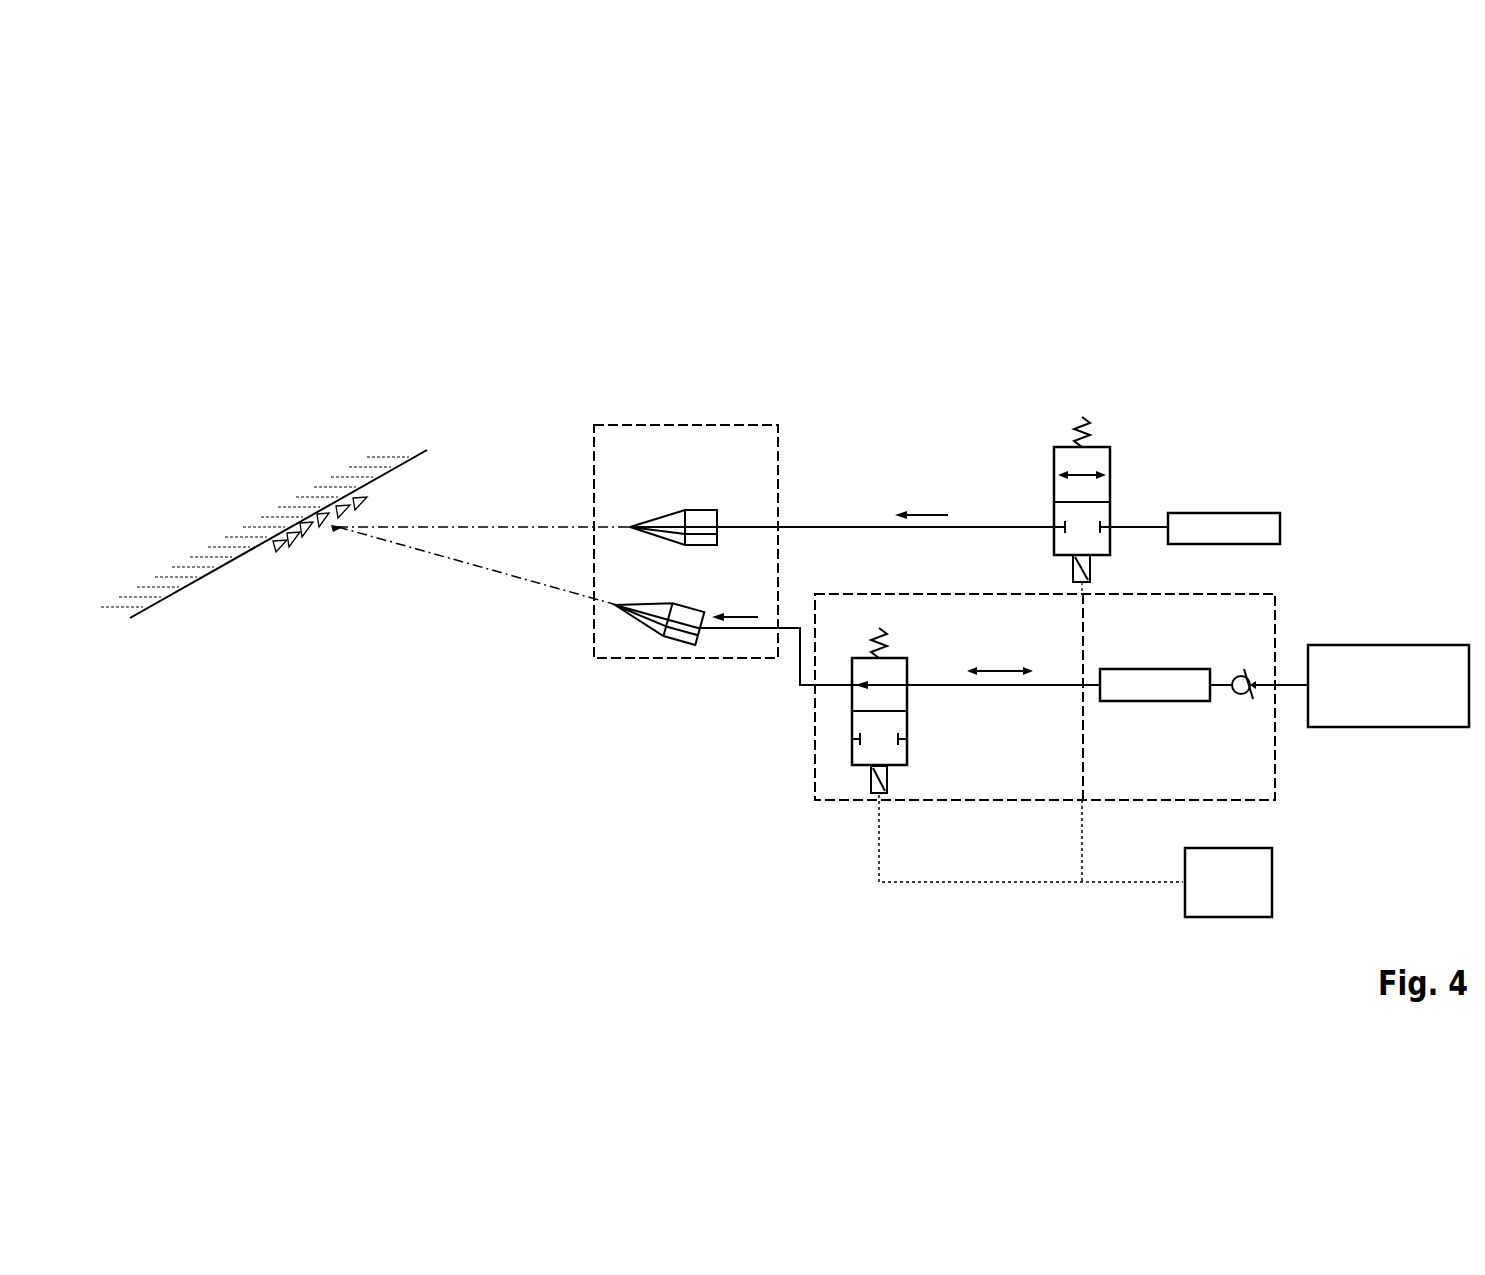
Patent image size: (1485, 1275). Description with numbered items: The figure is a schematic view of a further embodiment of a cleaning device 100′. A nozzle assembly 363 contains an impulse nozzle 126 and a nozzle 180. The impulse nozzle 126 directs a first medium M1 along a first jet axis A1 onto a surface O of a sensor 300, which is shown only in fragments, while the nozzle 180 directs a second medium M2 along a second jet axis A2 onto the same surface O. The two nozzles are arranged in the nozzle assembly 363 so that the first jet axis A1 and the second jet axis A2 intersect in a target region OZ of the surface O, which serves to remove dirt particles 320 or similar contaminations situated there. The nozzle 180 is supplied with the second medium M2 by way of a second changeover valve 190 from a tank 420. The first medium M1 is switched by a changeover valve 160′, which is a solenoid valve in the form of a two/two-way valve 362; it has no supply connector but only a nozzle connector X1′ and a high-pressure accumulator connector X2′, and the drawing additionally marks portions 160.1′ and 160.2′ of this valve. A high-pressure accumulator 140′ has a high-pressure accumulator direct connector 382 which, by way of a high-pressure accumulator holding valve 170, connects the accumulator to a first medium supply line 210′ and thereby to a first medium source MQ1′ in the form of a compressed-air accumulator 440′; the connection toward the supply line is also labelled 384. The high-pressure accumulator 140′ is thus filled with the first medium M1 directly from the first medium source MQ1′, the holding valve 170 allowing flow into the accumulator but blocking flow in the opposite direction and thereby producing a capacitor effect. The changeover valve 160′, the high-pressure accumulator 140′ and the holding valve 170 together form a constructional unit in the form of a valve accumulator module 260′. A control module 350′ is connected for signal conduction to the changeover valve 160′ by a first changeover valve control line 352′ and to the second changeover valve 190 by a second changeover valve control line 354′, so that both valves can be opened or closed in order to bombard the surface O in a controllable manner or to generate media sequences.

The cleaning device 100′ is at (785, 626).
The sensor 300 is at (264, 538).
The surface O is at (200, 600).
The dirt particles 320 is at (314, 577).
The target region OZ is at (333, 548).
The second jet axis A2 is at (497, 525).
The first jet axis A1 is at (470, 568).
The nozzle assembly 363 is at (651, 500).
The nozzle 180 is at (697, 510).
The impulse nozzle 126 is at (640, 634).
The first medium M1 is at (745, 612).
The second medium M2 is at (930, 512).
The second changeover valve 190 is at (1110, 425).
The tank 420 is at (1223, 511).
The valve accumulator module 260′ is at (998, 712).
The first changeover valve control line 352′ is at (877, 847).
The second changeover valve control line 354′ is at (1080, 847).
The changeover valve 160′ is at (949, 672).
The 2/2-way valve 362 is at (922, 732).
The valve spring / first valve part 160.1′ is at (897, 658).
The valve actuator / second valve part 160.2′ is at (908, 762).
The nozzle connector X1′ is at (845, 638).
The high-pressure accumulator connector X2′ is at (908, 690).
The high-pressure accumulator 140′ is at (1153, 703).
The high-pressure accumulator holding valve 170 is at (1238, 678).
The high-pressure accumulator direct connector 382 is at (1215, 690).
The fluid line 384 is at (1285, 690).
The first medium supply line 210′ is at (1292, 684).
The first medium source MQ1′ is at (1388, 640).
The compressed-air accumulator 440′ is at (1400, 643).
The control module 350′ is at (1232, 920).